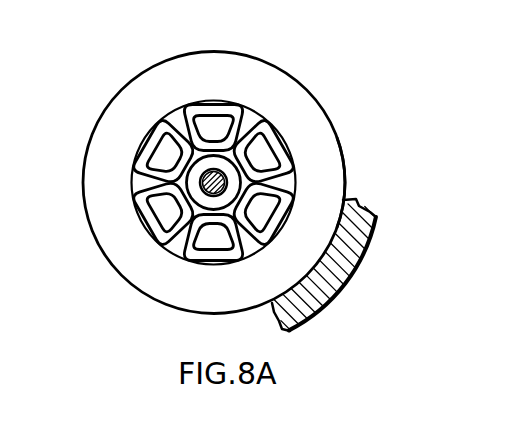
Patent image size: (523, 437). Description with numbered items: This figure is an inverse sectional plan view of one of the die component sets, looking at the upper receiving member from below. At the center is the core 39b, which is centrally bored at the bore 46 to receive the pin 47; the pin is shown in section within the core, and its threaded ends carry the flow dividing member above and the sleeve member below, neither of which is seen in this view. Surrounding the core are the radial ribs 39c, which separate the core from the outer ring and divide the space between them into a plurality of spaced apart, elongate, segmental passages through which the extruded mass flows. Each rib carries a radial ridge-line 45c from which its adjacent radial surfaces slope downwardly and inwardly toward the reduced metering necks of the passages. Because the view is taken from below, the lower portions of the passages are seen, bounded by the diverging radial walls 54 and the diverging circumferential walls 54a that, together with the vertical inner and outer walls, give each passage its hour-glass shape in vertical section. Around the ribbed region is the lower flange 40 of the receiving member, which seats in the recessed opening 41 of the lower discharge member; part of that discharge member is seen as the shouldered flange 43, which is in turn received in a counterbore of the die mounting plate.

The core 39b is at (211, 208).
The radial ribs 39c is at (134, 182).
The lower flange 40 is at (322, 162).
The recessed opening 41 is at (348, 177).
The shouldered flange 43 is at (336, 281).
The radial ridge-line 45c is at (200, 186).
The central bore 46 is at (270, 158).
The pin 47 is at (213, 182).
The diverging radial walls 54 is at (181, 137).
The diverging circumferential walls 54a is at (194, 130).